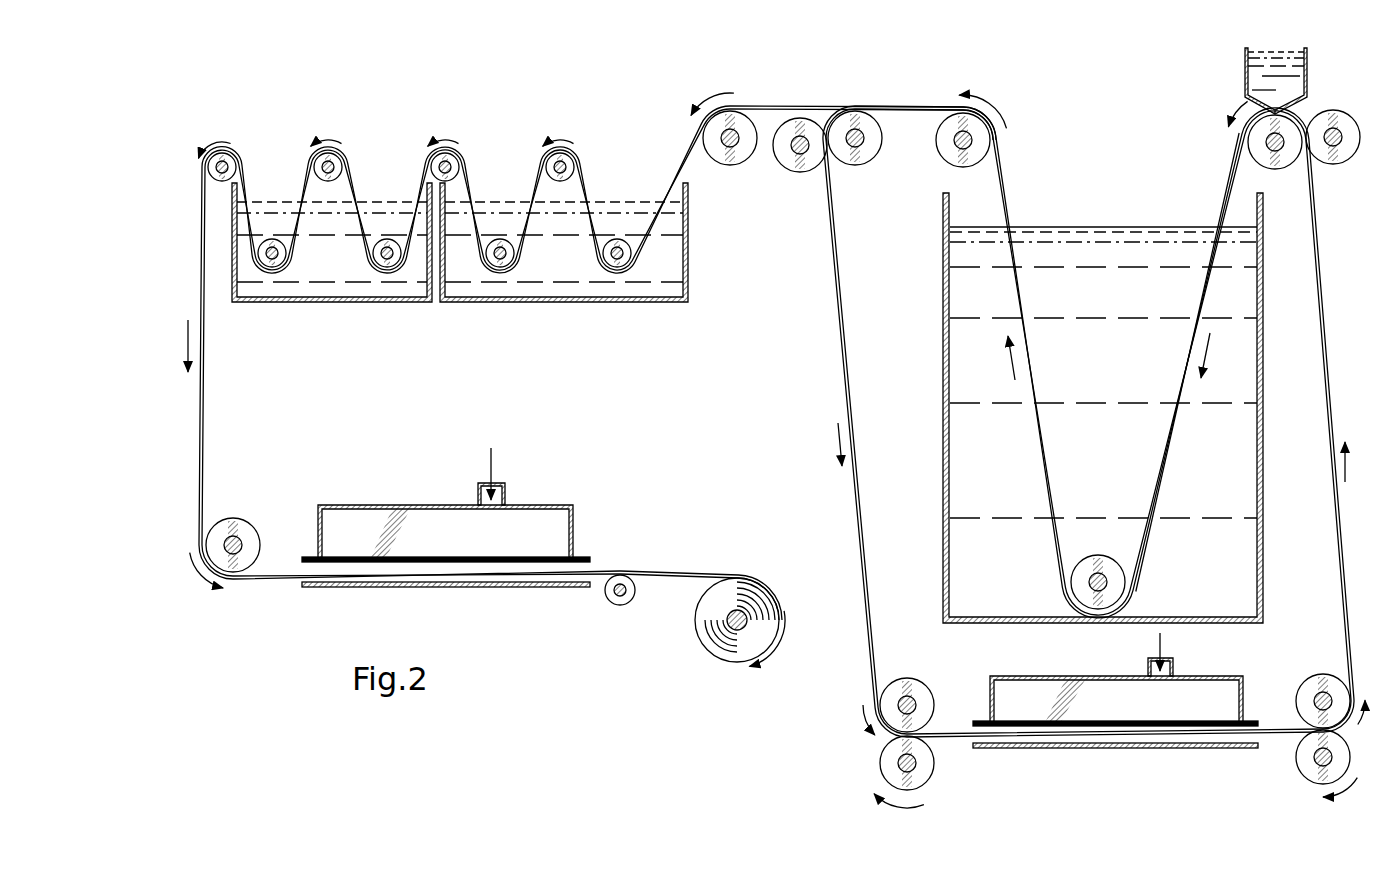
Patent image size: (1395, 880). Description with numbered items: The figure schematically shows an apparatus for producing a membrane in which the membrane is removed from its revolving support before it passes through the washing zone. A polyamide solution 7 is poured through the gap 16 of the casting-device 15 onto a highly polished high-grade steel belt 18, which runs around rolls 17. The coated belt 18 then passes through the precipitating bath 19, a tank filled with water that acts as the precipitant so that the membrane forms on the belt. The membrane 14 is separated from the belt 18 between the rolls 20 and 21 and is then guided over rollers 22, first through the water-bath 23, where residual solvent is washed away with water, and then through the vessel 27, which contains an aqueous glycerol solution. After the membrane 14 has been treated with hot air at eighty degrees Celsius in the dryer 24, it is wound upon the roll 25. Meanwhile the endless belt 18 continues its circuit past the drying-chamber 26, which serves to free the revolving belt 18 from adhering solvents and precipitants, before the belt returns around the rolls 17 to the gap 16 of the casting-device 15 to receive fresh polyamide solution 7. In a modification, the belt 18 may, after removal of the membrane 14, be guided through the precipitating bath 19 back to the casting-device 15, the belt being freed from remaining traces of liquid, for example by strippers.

The polyamide solution 7 is at (1288, 80).
The membrane 14 is at (775, 107).
The casting-device 15 is at (1240, 75).
The gap 16 is at (1280, 113).
The rolls 17 is at (1286, 161).
The steel belt 18 is at (842, 380).
The precipitating bath 19 is at (944, 315).
The roll 20 is at (950, 154).
The roll 21 is at (847, 158).
The rollers 22 is at (336, 161).
The water-bath 23 is at (439, 304).
The dryer 24 is at (360, 501).
The roll 25 is at (766, 611).
The drying-chamber 26 is at (1074, 673).
The vessel 27 is at (377, 304).